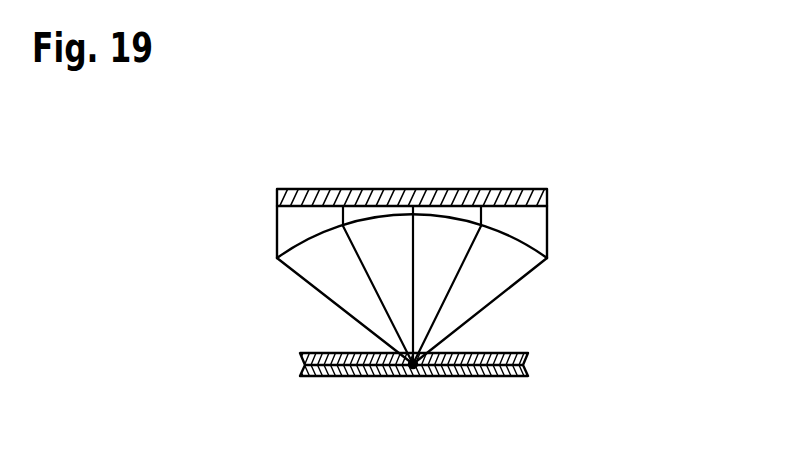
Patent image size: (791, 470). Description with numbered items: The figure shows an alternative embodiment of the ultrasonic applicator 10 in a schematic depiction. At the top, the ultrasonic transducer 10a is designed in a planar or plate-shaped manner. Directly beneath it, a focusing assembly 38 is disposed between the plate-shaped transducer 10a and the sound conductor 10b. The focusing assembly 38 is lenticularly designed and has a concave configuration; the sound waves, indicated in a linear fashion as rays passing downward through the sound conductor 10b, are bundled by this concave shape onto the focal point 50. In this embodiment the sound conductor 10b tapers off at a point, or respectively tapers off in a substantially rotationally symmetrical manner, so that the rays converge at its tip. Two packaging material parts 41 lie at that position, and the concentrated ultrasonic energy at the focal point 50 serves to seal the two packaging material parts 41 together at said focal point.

The ultrasonic applicator 10 is at (630, 162).
The ultrasonic transducer 10a is at (283, 198).
The focusing assembly 38 is at (300, 228).
The sound conductor 10b is at (320, 268).
The packaging material parts 41 is at (302, 366).
The focal point 50 is at (415, 378).